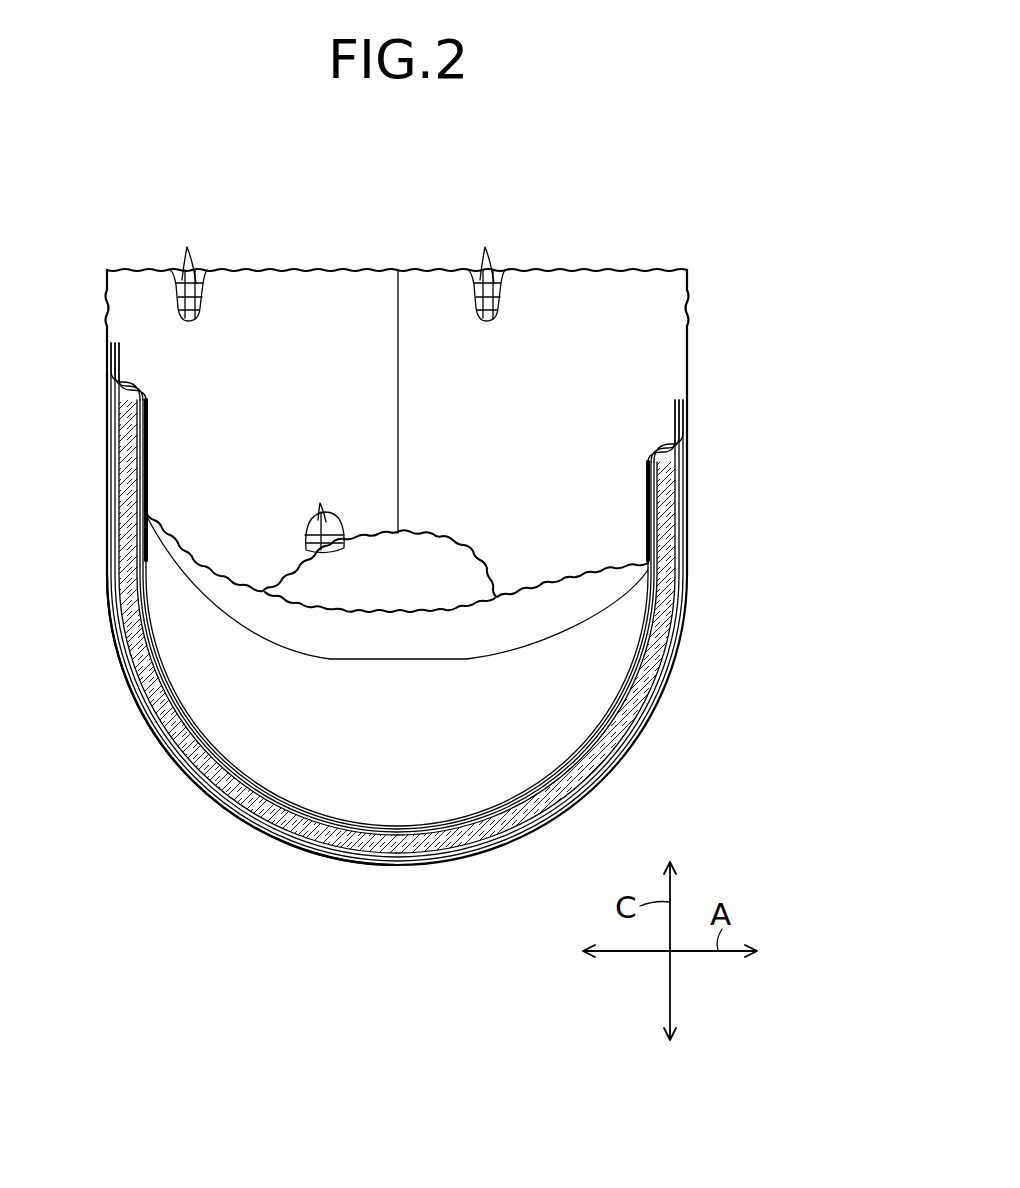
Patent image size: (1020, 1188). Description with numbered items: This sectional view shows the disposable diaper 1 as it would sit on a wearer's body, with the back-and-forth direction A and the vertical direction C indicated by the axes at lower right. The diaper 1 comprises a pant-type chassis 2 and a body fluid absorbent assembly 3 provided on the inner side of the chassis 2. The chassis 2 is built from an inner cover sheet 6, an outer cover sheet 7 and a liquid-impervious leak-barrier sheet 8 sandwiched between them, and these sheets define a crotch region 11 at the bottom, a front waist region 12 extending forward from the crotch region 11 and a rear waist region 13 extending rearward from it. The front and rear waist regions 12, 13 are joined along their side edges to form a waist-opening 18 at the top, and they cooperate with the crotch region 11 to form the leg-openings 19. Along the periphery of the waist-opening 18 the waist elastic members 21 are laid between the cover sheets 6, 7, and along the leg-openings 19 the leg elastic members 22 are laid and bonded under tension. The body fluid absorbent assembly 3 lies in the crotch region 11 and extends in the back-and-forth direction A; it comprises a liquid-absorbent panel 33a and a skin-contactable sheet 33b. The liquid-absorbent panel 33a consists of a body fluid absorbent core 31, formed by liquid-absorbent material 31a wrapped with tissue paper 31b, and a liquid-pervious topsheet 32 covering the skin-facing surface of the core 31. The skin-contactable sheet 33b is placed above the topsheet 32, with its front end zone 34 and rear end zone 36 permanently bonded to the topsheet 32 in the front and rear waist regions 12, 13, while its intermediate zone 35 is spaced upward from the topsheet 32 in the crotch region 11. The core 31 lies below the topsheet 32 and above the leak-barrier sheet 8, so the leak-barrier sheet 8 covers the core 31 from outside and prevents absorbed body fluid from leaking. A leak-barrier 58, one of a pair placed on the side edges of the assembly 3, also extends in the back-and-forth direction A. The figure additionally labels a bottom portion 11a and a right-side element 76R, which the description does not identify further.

The diaper 1 is at (697, 131).
The pant-type chassis 2 is at (660, 244).
The body fluid absorbent assembly 3 is at (470, 673).
The inner cover sheet 6 is at (128, 656).
The outer cover sheet 7 is at (132, 700).
The liquid-impervious leak-barrier sheet 8 is at (152, 747).
The crotch region 11 is at (322, 868).
The bottom surface 11a is at (373, 866).
The front waist region 12 is at (256, 278).
The rear waist region 13 is at (541, 280).
The waist-opening 18 is at (355, 312).
The leg-openings 19 is at (445, 570).
The waist elastic members 21 is at (338, 270).
The leg elastic members 22 is at (322, 513).
The body fluid absorbent core 31 is at (672, 572).
The liquid-absorbent material 31a is at (342, 834).
The tissue paper 31b is at (265, 810).
The liquid-pervious topsheet 32 is at (420, 827).
The liquid-absorbent panel 33a is at (583, 741).
The skin-contactable sheet 33b is at (557, 647).
The front end zone 34 is at (150, 424).
The intermediate zone 35 is at (385, 658).
The rear end zone 36 is at (648, 492).
The leak-barrier 58 is at (553, 581).
The right hook 76R is at (450, 818).